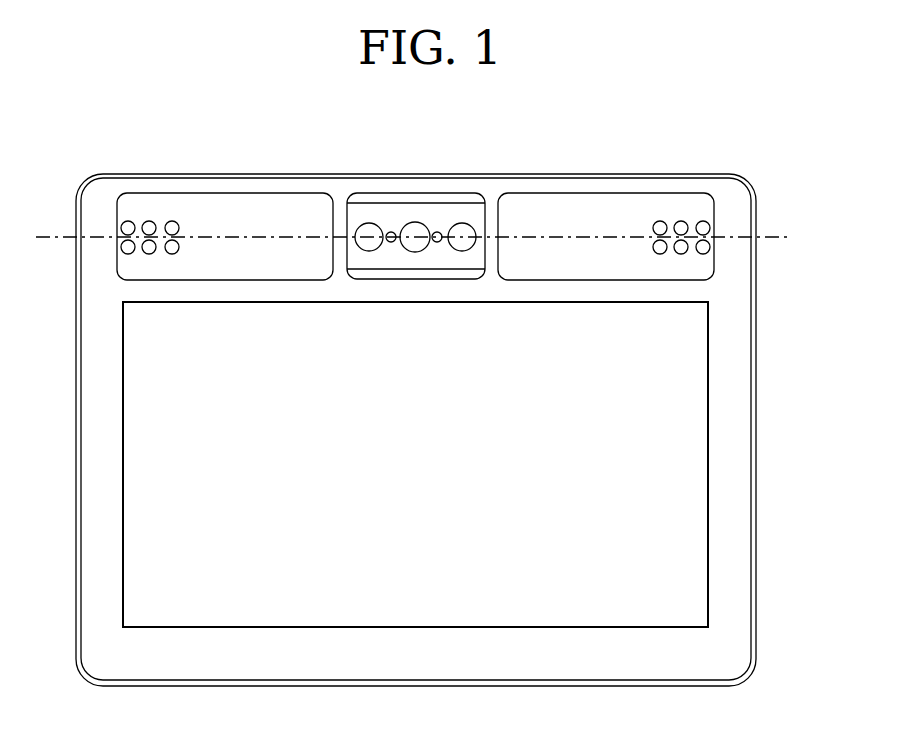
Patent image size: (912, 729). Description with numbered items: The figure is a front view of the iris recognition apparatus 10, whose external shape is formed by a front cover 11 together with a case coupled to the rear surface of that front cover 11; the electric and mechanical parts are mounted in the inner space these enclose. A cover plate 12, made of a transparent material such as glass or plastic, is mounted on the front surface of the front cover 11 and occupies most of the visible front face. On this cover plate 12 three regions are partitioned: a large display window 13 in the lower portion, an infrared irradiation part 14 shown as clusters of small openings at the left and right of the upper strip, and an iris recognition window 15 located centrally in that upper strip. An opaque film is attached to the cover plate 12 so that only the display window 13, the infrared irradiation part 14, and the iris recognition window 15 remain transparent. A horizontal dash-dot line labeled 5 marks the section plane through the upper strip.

The iris recognition apparatus 10 is at (703, 149).
The front cover 11 is at (755, 522).
The cover plate 12 is at (736, 363).
The display window 13 is at (708, 443).
The infrared irradiation part 14 is at (149, 221).
The iris recognition window 15 is at (414, 193).
The section line of FIG. 5 is at (40, 237).